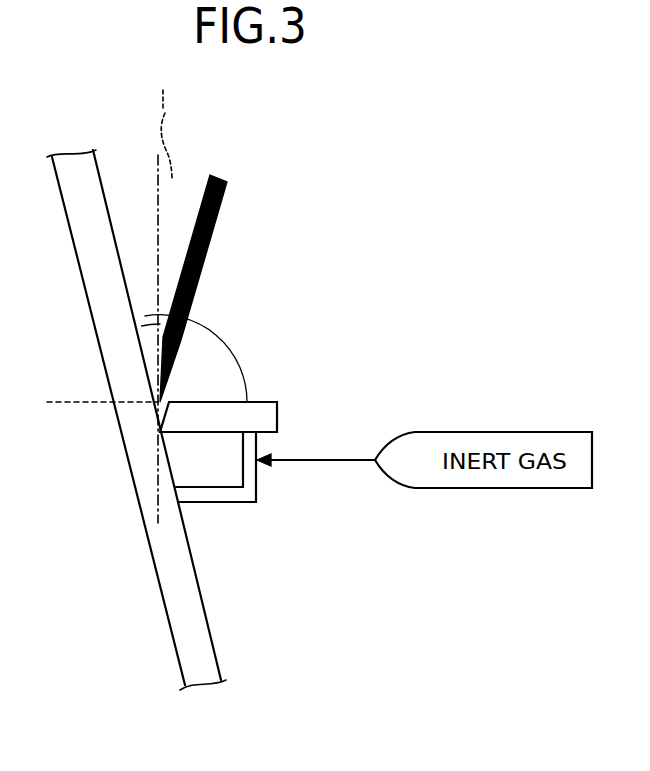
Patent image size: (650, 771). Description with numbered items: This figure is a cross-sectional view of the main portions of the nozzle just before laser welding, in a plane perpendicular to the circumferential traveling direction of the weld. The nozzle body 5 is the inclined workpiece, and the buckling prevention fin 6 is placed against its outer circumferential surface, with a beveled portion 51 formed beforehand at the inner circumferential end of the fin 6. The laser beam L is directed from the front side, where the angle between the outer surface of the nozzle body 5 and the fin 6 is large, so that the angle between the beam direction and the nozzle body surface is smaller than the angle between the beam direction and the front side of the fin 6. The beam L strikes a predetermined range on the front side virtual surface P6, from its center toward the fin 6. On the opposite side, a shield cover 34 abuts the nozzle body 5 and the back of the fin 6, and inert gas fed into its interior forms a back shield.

The nozzle body 5 is at (81, 277).
The front side virtual surface P6 is at (68, 400).
The laser beam L is at (213, 223).
The beveled portion 51 is at (168, 396).
The buckling prevention fin 6 is at (277, 414).
The shield cover 34 is at (223, 502).